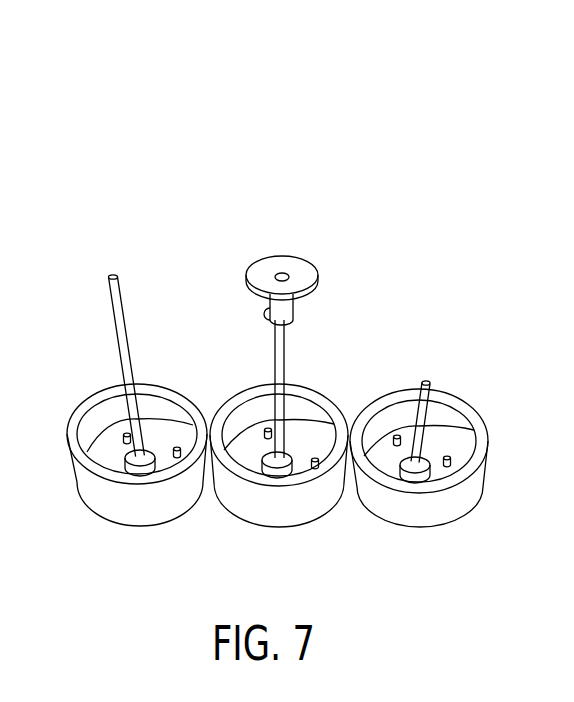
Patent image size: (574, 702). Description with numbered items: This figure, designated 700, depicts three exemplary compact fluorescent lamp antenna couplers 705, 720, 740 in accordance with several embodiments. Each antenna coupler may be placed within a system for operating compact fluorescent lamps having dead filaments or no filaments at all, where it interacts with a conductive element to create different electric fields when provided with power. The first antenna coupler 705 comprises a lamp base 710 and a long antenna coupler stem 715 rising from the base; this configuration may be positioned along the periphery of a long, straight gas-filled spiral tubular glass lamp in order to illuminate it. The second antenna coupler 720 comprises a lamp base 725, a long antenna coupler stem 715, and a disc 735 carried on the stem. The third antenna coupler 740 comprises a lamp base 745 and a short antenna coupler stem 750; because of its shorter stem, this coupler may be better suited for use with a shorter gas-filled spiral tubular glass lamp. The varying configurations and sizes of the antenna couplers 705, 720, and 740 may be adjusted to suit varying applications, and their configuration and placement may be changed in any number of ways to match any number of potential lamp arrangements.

The compact fluorescent lamp antenna couplers depiction 700 is at (263, 290).
The antenna coupler 705 is at (117, 372).
The lamp base 710 is at (68, 455).
The long antenna coupler stem 715 is at (113, 276).
The antenna coupler 720 is at (282, 388).
The lamp base 725 is at (249, 510).
The disc 735 is at (294, 267).
The antenna coupler 740 is at (424, 427).
The lamp base 745 is at (467, 483).
The short antenna coupler stem 750 is at (410, 433).